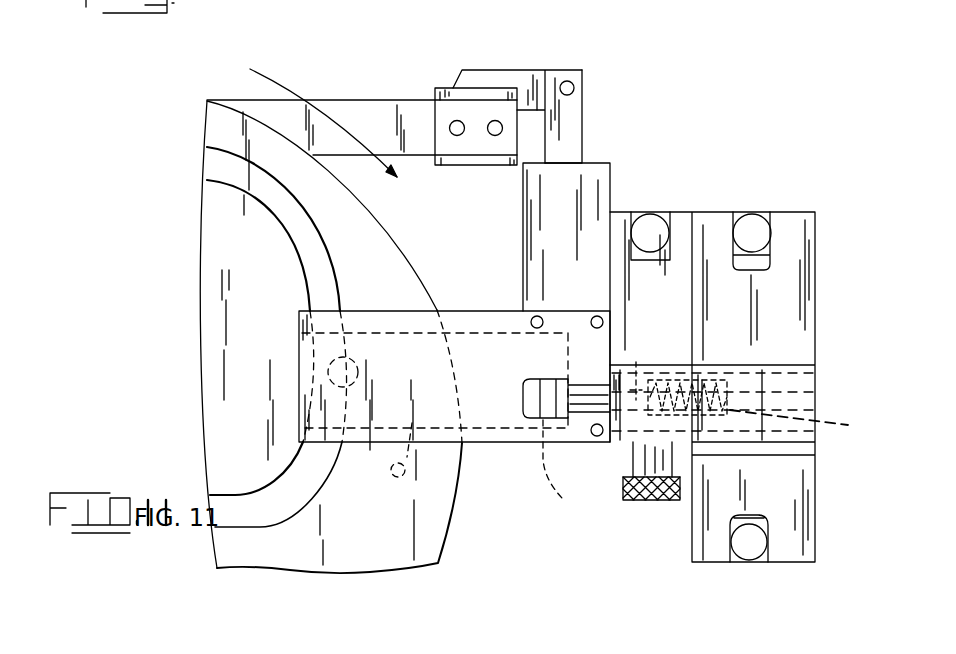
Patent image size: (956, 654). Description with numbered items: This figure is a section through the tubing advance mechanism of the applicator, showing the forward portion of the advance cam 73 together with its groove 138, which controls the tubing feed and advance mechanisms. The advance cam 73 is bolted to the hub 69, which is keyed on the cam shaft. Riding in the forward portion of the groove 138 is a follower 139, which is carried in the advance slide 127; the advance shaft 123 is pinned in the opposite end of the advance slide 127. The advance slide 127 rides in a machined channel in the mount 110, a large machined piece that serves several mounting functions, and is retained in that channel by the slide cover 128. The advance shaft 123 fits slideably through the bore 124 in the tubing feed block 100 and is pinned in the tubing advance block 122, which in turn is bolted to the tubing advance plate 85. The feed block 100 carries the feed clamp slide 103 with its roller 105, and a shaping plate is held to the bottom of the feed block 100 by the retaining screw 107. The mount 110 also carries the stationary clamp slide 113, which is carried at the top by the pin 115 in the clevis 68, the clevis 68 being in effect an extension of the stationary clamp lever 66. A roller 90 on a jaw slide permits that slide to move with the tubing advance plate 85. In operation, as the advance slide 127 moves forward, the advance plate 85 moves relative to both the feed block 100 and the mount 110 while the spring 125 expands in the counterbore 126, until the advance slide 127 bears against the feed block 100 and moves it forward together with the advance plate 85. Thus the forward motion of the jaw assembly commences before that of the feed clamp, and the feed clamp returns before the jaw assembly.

The stationary clamp lever 66 is at (407, 107).
The clevis 68 is at (510, 73).
The hub 69 is at (443, 87).
The advance cam 73 is at (383, 242).
The tubing advance plate 85 is at (805, 238).
The roller 90 is at (757, 222).
The tubing feed block 100 is at (659, 327).
The feed clamp slide 103 is at (667, 218).
The roller 105 is at (637, 220).
The retaining screw 107 is at (643, 500).
The mount 110 is at (603, 197).
The stationary clamp slide 113 is at (577, 140).
The pin 115 is at (577, 80).
The tubing advance block 122 is at (805, 380).
The advance shaft 123 is at (524, 345).
The bore 124 is at (626, 340).
The spring 125 is at (721, 320).
The counterbore 126 is at (857, 420).
The advance slide 127 is at (414, 466).
The slide cover 128 is at (480, 443).
The groove 138 is at (221, 306).
The follower 139 is at (343, 372).